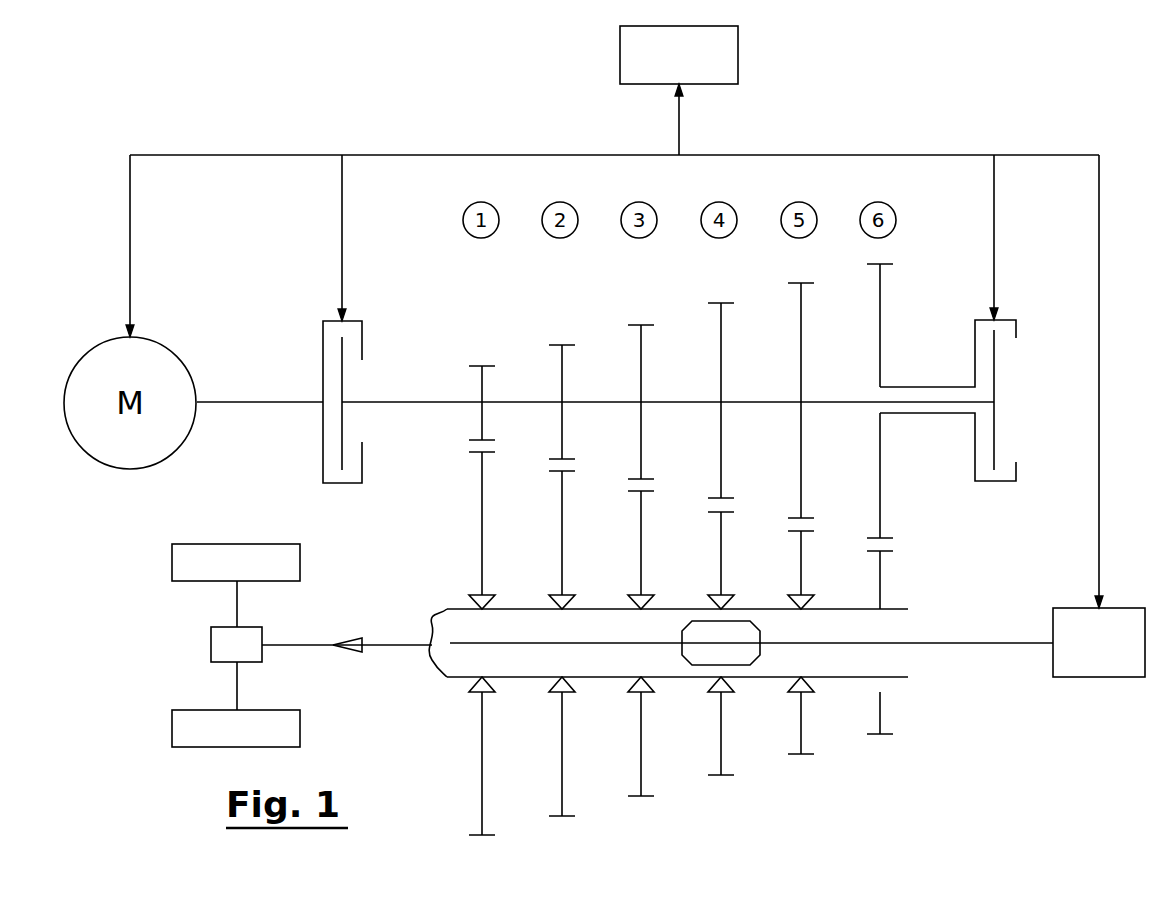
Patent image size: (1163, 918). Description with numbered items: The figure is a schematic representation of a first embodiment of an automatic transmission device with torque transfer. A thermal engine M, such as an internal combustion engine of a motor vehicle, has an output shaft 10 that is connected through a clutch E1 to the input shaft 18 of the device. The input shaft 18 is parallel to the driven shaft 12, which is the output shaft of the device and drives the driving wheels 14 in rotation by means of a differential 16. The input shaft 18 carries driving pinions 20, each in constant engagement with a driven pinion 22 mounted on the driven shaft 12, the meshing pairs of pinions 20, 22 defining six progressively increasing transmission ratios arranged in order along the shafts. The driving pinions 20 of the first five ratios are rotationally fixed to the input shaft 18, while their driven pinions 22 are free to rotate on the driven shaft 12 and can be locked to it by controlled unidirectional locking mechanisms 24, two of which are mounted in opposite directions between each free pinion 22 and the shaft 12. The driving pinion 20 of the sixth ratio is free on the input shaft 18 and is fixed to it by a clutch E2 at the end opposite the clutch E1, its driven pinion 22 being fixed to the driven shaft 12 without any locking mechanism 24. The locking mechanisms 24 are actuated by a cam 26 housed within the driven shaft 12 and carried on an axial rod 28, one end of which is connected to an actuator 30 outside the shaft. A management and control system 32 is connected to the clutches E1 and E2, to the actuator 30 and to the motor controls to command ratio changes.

The output shaft of the thermal engine 10 is at (278, 402).
The driven shaft 12 is at (447, 609).
The driving wheels 14 is at (172, 565).
The differential 16 is at (211, 636).
The input shaft 18 is at (440, 402).
The driving pinions 20 is at (562, 383).
The driven pinions 22 is at (482, 520).
The controlled unidirectional locking mechanisms 24 is at (558, 598).
The cam 26 is at (682, 630).
The axial rod 28 is at (975, 643).
The actuator 30 is at (1099, 642).
The system for managing and controlling the device 32 is at (679, 90).
The clutch E1 is at (323, 352).
The clutch E2 is at (975, 346).